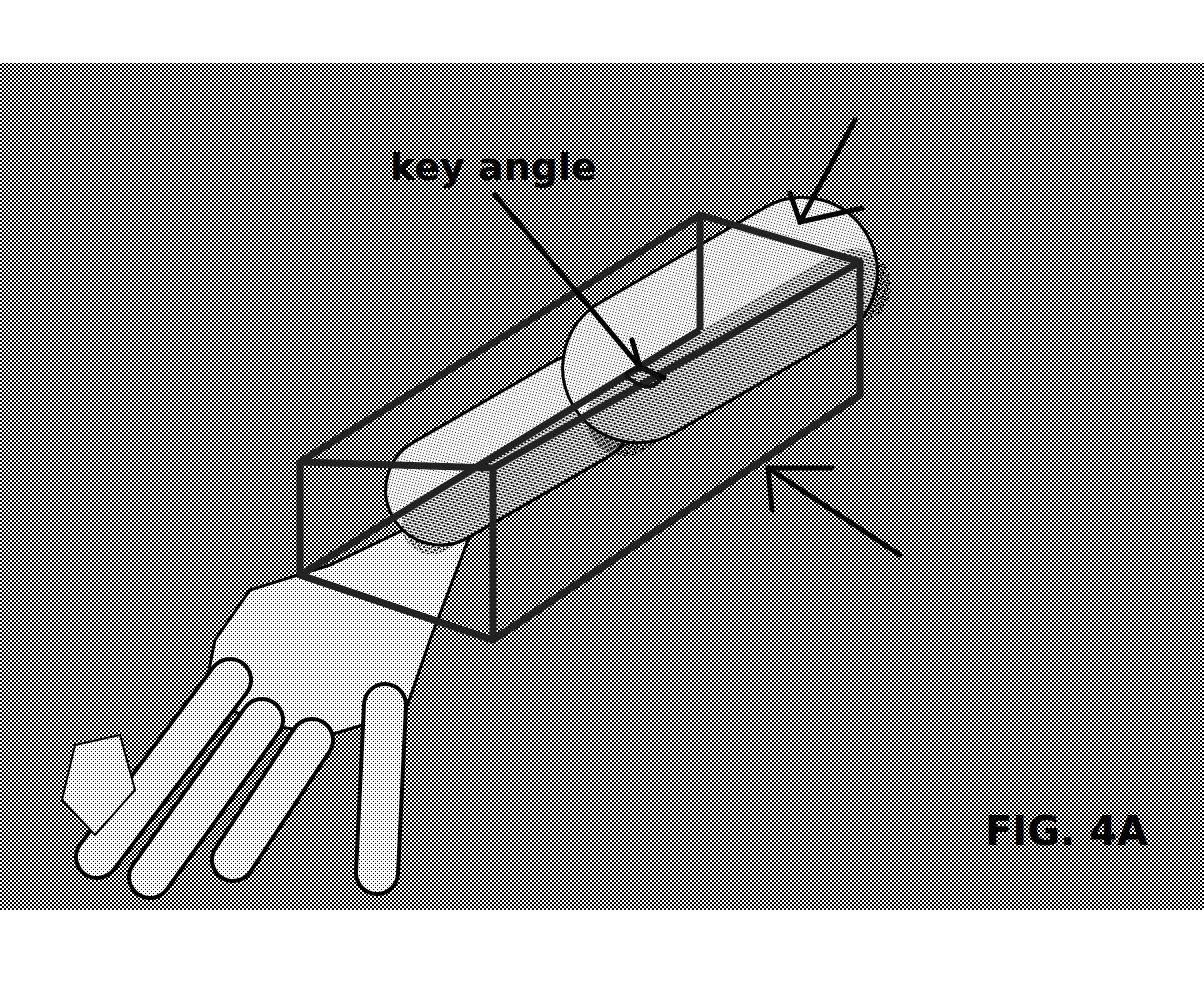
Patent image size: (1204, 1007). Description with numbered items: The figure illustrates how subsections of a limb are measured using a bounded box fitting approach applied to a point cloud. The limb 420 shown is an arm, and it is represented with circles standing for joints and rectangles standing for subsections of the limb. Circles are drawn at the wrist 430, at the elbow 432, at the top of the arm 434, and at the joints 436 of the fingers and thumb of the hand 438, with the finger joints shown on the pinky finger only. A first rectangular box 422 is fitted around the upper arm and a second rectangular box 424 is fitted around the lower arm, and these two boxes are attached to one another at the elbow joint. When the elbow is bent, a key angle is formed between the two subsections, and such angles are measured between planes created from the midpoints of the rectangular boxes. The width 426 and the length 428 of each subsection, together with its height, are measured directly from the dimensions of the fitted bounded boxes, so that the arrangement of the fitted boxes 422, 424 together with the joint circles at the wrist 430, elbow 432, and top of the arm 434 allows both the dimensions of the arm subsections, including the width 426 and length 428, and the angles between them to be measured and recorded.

The limb 420 is at (1144, 11).
The rectangular box 422 is at (676, 228).
The rectangular box 424 is at (612, 582).
The key width 426 is at (915, 128).
The key length 428 is at (940, 584).
The wrist 430 is at (545, 660).
The elbow 432 is at (600, 300).
The top of the arm 434 is at (842, 168).
The joints of the fingers and thumb 436 is at (190, 678).
The hand 438 is at (300, 638).